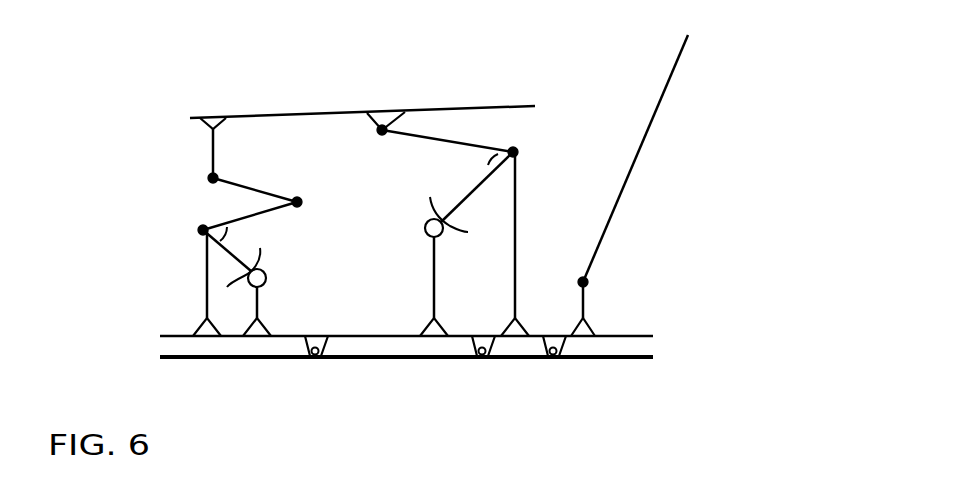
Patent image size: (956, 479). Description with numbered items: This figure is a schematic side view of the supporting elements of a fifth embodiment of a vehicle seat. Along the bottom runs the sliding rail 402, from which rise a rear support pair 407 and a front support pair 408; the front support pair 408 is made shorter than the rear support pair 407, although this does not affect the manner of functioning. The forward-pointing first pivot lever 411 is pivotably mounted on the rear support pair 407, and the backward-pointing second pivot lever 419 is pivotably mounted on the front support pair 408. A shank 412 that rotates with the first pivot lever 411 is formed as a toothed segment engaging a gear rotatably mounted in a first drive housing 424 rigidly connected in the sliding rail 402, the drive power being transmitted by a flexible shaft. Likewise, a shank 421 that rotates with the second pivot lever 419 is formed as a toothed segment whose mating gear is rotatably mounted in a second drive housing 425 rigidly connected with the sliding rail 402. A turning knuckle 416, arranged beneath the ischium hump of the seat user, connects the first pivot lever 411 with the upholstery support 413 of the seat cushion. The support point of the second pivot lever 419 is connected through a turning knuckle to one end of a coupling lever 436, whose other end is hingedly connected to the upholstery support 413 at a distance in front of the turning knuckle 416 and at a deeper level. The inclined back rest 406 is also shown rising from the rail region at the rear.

The sliding rail 402 is at (393, 338).
The back rest 406 is at (632, 176).
The rear support pair 407 is at (518, 218).
The front support pair 408 is at (203, 282).
The first pivot lever 411 is at (470, 143).
The other shank 412 is at (472, 192).
The upholstery support 413 is at (268, 117).
The turning knuckle 416 is at (410, 118).
The second pivot lever 419 is at (237, 213).
The other shank 421 is at (232, 250).
The first drive housing 424 is at (442, 239).
The second drive housing 425 is at (268, 278).
The coupling lever 436 is at (238, 183).